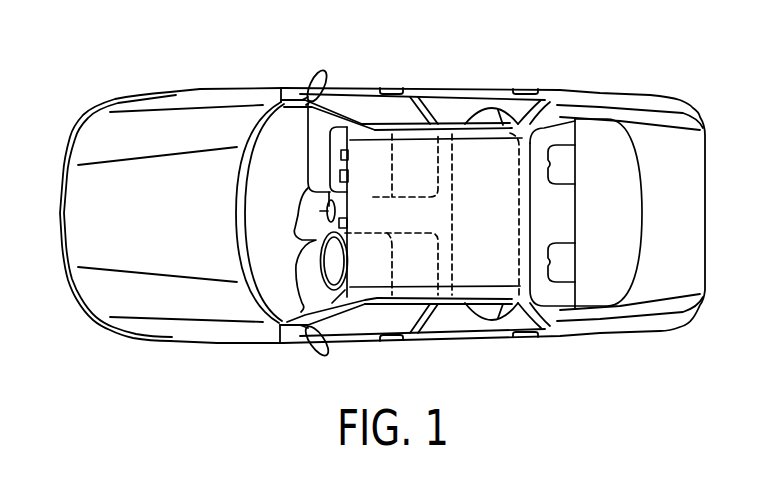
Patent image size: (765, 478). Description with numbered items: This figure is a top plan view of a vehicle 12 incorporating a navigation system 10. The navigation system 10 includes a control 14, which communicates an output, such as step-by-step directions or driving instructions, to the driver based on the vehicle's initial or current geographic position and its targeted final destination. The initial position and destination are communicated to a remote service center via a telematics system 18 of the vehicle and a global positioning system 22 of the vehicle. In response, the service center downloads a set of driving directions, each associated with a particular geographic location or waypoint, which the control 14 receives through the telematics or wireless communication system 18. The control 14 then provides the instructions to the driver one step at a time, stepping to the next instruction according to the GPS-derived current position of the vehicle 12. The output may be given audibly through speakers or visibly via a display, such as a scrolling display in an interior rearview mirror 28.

The navigation system 10 is at (272, 184).
The vehicle 12 is at (199, 80).
The control 14 is at (347, 225).
The telematics system 18 is at (348, 180).
The global positioning system 22 is at (352, 158).
The interior rearview mirror 28 is at (342, 213).